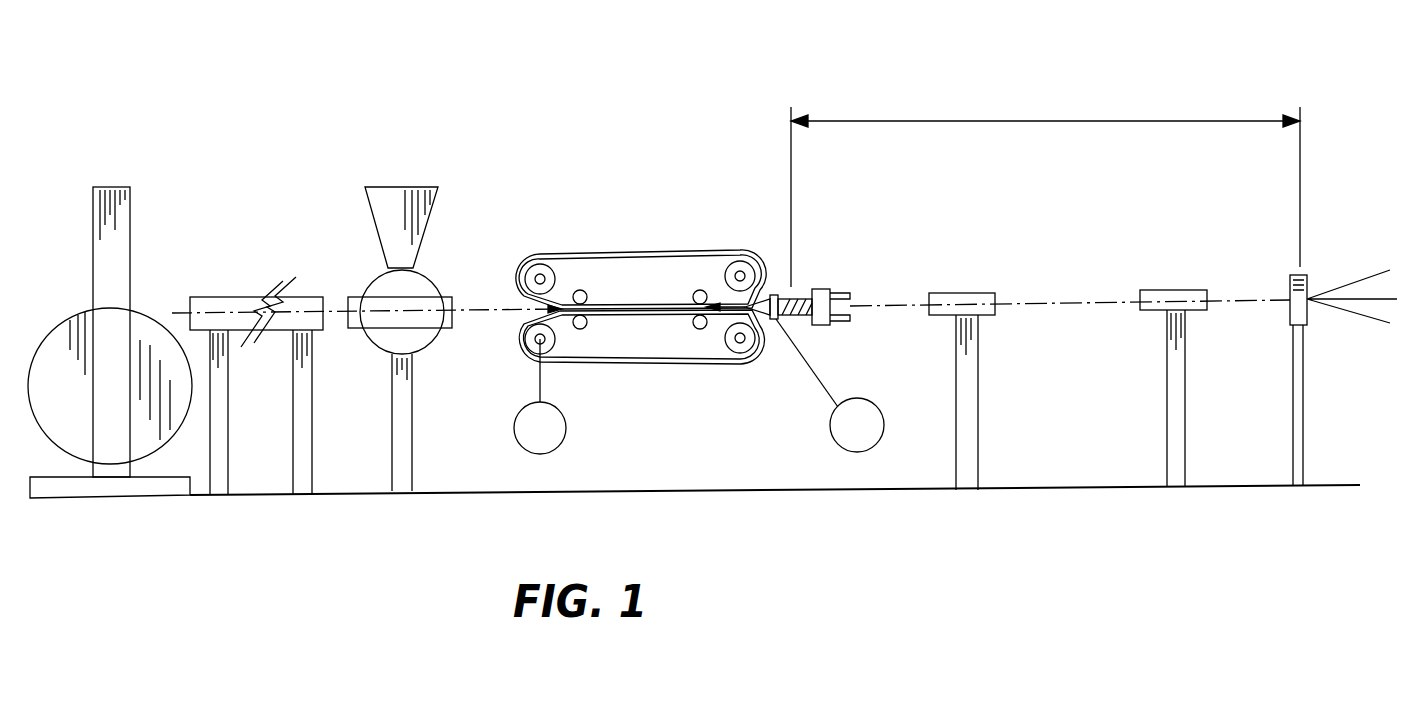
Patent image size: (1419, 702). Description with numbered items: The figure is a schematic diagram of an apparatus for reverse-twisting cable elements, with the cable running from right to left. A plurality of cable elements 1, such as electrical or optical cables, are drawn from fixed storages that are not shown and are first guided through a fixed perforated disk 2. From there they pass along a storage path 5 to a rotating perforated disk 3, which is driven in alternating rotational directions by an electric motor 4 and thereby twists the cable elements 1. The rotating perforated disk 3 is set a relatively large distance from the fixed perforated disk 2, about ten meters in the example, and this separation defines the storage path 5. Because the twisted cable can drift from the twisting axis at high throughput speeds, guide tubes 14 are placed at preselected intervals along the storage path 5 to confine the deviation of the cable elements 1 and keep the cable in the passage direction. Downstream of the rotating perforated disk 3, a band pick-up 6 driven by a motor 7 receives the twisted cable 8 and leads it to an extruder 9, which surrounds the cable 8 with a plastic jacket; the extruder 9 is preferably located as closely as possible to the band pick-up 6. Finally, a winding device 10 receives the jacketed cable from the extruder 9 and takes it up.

The cable elements 1 is at (1360, 279).
The fixed perforated disk 2 is at (1306, 274).
The rotating perforated disk 3 is at (768, 293).
The electric motor 4 is at (884, 420).
The storage path 5 is at (1053, 119).
The band pick-up 6 is at (642, 251).
The motor 7 is at (514, 428).
The cable 8 is at (470, 302).
The extruder 9 is at (418, 188).
The winding device 10 is at (121, 211).
The guide tube 14 is at (1177, 292).